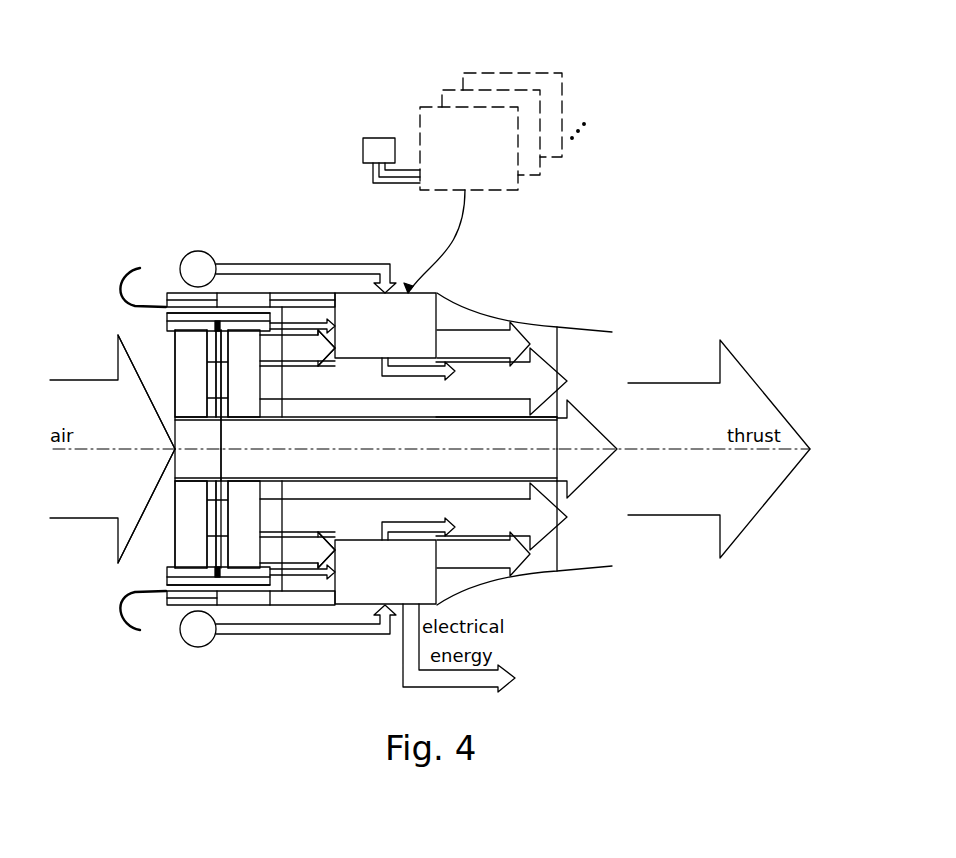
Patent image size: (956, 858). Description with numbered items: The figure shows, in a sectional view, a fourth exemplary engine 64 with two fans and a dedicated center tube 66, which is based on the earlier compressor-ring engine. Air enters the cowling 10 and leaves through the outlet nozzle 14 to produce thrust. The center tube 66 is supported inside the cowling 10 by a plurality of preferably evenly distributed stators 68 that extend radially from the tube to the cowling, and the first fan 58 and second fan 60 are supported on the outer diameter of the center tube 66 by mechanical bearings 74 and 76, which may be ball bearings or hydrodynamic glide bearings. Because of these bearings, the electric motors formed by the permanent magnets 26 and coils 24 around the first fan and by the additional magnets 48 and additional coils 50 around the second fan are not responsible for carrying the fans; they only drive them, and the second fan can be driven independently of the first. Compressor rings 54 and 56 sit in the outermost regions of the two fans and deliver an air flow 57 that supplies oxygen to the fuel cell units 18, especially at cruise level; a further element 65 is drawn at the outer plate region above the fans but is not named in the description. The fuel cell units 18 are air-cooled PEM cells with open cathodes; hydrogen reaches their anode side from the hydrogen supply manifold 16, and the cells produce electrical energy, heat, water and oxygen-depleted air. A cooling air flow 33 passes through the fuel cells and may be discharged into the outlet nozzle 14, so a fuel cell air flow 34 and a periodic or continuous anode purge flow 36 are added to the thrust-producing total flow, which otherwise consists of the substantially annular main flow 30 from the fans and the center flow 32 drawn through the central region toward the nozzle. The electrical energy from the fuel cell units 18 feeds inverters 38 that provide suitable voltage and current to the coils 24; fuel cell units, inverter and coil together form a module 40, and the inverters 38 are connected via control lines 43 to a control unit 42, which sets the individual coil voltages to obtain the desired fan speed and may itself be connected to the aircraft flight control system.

The cowling 10 is at (125, 268).
The outlet nozzle 14 is at (610, 330).
The hydrogen supply manifold 16 is at (197, 251).
The fuel cell unit 18 is at (398, 336).
The coil 24 is at (178, 295).
The permanent magnet 26 is at (215, 308).
The main flow 30 is at (537, 356).
The center flow 32 is at (585, 428).
The cooling air flow 33 is at (322, 348).
The fuel cell air flow 34 is at (460, 335).
The anode purge flow 36 is at (415, 376).
The inverter 38 is at (318, 300).
The module 40 is at (428, 117).
The control unit 42 is at (375, 148).
The control line 43 is at (412, 170).
The additional magnet 48 is at (250, 320).
The additional coil 50 is at (235, 307).
The compressor ring 54 is at (172, 309).
The compressor ring 56 is at (268, 322).
The air flow 57 is at (295, 340).
The first fan 58 is at (204, 371).
The second fan 60 is at (259, 391).
The engine 64 is at (634, 220).
The plate segment 65 is at (300, 312).
The center tube 66 is at (483, 415).
The stator 68 is at (213, 340).
The mechanical bearing 74 is at (177, 417).
The mechanical bearing 76 is at (208, 413).